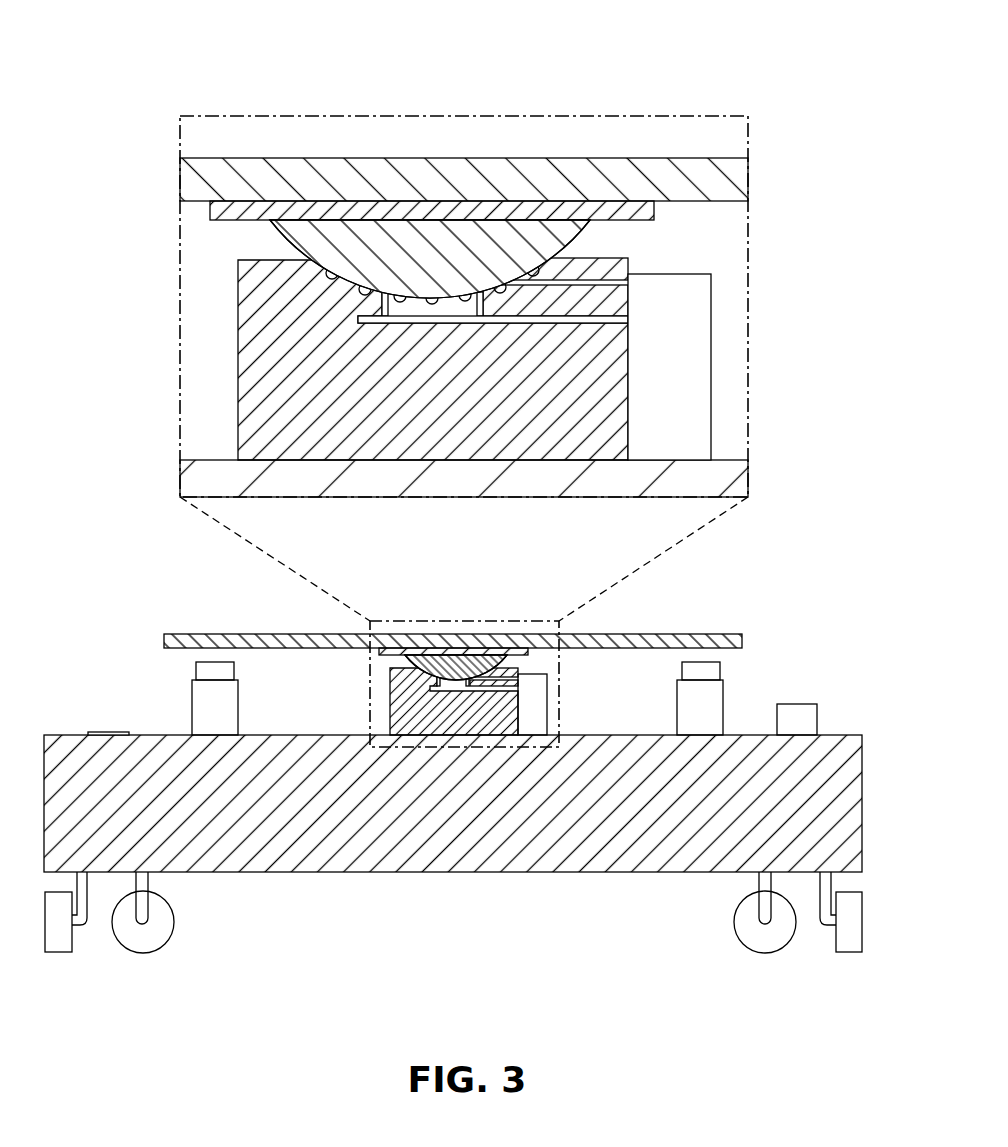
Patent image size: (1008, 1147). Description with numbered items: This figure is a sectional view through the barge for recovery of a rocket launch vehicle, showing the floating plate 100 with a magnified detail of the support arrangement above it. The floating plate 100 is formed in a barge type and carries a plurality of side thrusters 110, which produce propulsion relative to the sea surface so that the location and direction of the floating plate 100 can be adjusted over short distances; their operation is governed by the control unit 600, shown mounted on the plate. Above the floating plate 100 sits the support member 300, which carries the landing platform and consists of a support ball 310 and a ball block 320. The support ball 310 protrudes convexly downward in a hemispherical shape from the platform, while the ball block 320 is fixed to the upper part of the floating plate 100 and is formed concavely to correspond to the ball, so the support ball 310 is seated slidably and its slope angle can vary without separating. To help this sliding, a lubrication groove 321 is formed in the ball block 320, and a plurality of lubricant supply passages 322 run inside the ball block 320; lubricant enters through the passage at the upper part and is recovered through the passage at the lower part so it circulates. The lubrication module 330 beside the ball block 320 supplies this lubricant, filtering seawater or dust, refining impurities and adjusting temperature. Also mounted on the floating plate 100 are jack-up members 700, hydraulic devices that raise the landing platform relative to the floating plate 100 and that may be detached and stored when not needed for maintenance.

The floating plate 100 is at (838, 735).
The side thrusters 110 is at (57, 943).
The support member 300 is at (465, 45).
The support ball 310 is at (453, 232).
The ball block 320 is at (593, 267).
The lubrication groove 321 is at (398, 292).
The lubricant supply passages 322 is at (434, 323).
The lubrication module 330 is at (695, 330).
The control unit 600 is at (800, 707).
The jack-up members 700 is at (193, 705).